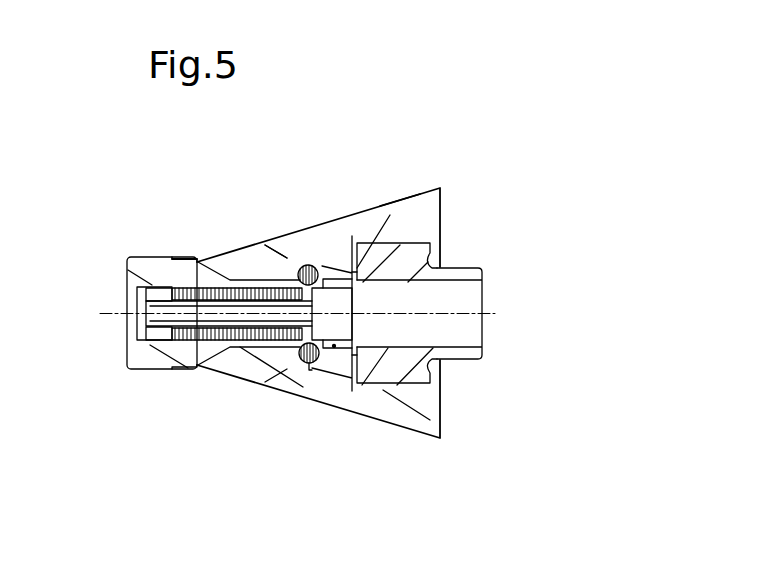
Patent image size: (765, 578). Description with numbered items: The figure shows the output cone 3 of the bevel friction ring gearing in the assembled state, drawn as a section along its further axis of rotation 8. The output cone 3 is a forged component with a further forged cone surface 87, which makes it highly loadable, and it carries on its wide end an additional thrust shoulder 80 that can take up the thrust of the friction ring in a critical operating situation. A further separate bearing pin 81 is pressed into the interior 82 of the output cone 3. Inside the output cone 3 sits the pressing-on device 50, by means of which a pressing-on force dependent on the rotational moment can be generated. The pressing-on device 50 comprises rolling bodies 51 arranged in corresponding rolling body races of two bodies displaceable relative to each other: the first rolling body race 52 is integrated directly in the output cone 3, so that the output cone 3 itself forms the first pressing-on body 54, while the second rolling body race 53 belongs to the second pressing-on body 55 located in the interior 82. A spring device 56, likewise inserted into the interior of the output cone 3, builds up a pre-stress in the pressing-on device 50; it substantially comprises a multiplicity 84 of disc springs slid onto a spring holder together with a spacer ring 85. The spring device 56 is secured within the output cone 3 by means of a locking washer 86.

The output cone 3 is at (283, 242).
The further axis of rotation 8 is at (128, 312).
The pressing-on device 50 is at (243, 195).
The rolling bodies 51 is at (298, 374).
The first rolling body race 52 is at (295, 263).
The second rolling body race 53 is at (324, 260).
The first pressing-on body 54 is at (392, 460).
The second pressing-on body 55 is at (334, 347).
The spring device 56 is at (209, 237).
The thrust shoulder 80 is at (183, 372).
The bearing pin 81 is at (472, 277).
The interior 82 is at (343, 260).
The multiplicity of disc springs 84 is at (240, 343).
The spacer ring 85 is at (160, 341).
The locking washer 86 is at (150, 337).
The further forged cone surface 87 is at (398, 199).